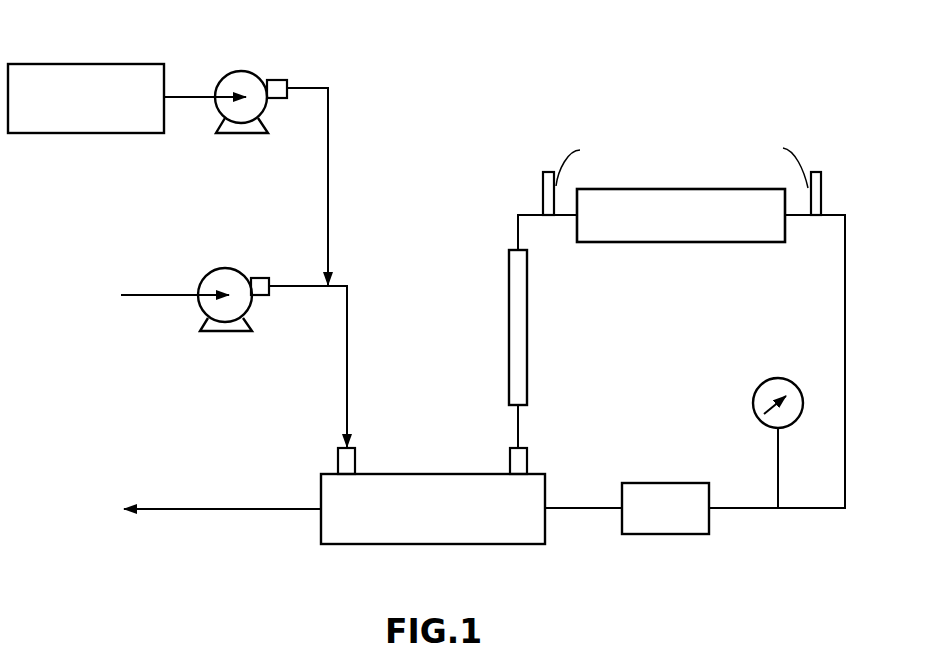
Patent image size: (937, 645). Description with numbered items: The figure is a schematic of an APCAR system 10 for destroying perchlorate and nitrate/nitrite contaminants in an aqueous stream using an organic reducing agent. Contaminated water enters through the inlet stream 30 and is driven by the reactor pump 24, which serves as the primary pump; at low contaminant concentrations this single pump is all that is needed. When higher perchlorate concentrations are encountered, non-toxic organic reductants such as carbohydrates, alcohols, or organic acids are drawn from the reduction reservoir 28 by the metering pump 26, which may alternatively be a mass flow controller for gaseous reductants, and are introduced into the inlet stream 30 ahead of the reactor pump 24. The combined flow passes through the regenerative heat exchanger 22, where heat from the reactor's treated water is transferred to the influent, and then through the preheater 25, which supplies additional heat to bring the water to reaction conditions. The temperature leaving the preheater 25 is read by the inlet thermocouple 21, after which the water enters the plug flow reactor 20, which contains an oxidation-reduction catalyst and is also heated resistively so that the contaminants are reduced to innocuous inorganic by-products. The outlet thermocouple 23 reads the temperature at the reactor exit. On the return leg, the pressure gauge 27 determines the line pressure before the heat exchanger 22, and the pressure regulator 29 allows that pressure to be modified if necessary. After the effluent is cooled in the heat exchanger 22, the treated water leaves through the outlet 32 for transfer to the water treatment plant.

The system 10 is at (446, 301).
The plug flow reactor 20 is at (593, 243).
The inlet thermocouple 21 is at (542, 193).
The regenerative heat exchanger 22 is at (434, 472).
The outlet thermocouple 23 is at (823, 189).
The reactor pump 24 is at (227, 267).
The preheater 25 is at (528, 333).
The metering pump 26 is at (240, 135).
The pressure gauge 27 is at (752, 404).
The reduction reservoir 28 is at (52, 63).
The pressure regulator 29 is at (664, 536).
The inlet stream 30 is at (150, 291).
The outlet 32 is at (161, 507).